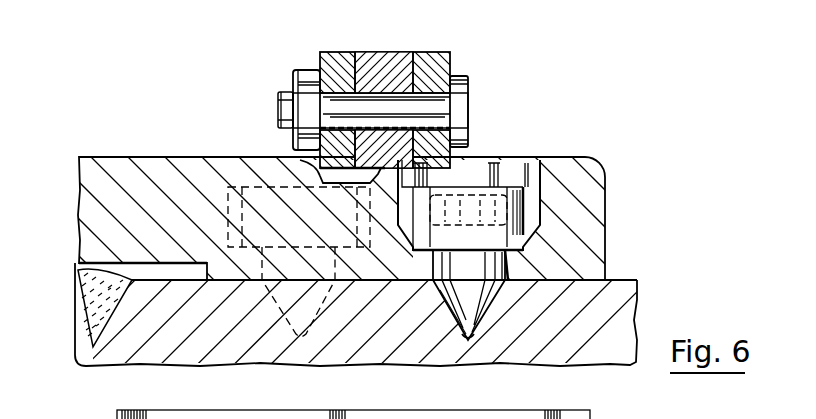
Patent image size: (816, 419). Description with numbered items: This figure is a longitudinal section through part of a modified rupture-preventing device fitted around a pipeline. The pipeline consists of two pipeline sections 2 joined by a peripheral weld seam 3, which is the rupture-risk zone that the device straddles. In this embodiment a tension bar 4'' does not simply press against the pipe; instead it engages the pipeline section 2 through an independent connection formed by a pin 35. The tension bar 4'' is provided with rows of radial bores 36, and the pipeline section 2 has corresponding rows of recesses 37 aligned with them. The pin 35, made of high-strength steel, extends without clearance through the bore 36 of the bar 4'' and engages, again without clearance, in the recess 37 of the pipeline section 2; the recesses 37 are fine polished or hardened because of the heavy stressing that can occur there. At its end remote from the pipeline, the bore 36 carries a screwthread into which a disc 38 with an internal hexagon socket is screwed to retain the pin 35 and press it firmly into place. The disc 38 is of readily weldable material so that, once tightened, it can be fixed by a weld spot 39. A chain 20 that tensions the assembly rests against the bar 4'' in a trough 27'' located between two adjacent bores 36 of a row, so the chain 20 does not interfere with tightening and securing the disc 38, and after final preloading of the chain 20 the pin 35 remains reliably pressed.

The pipeline section 2 is at (127, 352).
The peripheral weld seam 3 is at (78, 283).
The tension bar 4'' is at (352, 220).
The chain 20 is at (455, 50).
The trough 27'' is at (311, 153).
The pin 35 is at (462, 316).
The radial bore 36 is at (508, 265).
The recess 37 is at (482, 306).
The disc 38 is at (540, 210).
The weld spot 39 is at (522, 186).